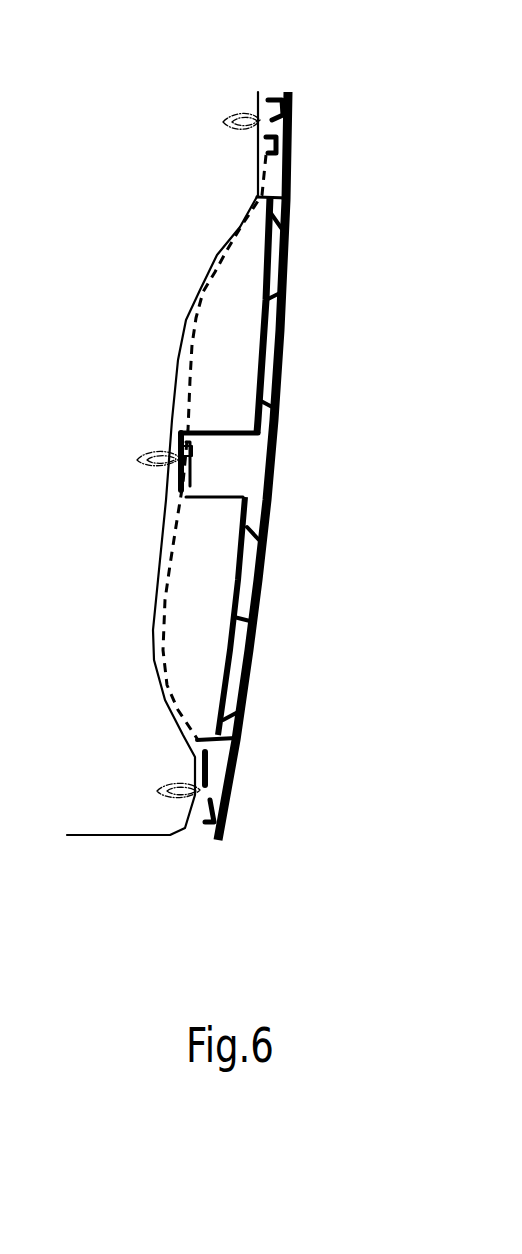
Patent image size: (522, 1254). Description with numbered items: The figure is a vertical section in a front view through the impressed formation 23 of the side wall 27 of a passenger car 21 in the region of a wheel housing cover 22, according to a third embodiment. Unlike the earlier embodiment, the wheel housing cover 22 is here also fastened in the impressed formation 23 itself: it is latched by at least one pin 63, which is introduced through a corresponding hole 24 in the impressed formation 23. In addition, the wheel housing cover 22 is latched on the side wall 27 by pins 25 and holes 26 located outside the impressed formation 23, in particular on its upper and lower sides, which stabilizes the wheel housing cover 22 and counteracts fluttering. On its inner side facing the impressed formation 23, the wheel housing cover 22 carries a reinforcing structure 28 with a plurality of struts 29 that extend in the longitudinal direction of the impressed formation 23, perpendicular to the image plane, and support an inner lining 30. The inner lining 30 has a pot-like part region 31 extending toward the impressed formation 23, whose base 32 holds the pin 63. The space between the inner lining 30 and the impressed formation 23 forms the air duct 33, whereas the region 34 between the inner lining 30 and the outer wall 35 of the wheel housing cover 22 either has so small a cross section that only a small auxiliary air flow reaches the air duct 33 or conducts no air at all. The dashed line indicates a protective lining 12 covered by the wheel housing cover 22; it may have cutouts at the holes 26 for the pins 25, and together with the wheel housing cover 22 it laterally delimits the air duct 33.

The protective lining 12 is at (163, 645).
The passenger car 21 is at (136, 170).
The wheel housing cover 22 is at (278, 362).
The impressed formation 23 is at (183, 313).
The hole 24 is at (176, 435).
The pins 25 is at (223, 122).
The holes 26 is at (257, 138).
The side wall 27 is at (258, 100).
The reinforcing structure 28 is at (240, 583).
The struts 29 is at (287, 233).
The inner lining 30 is at (253, 387).
The pot-like part region 31 is at (205, 495).
The base 32 is at (186, 450).
The air duct 33 is at (243, 277).
The region 34 is at (270, 325).
The outer wall 35 is at (230, 741).
The pin 63 is at (152, 472).